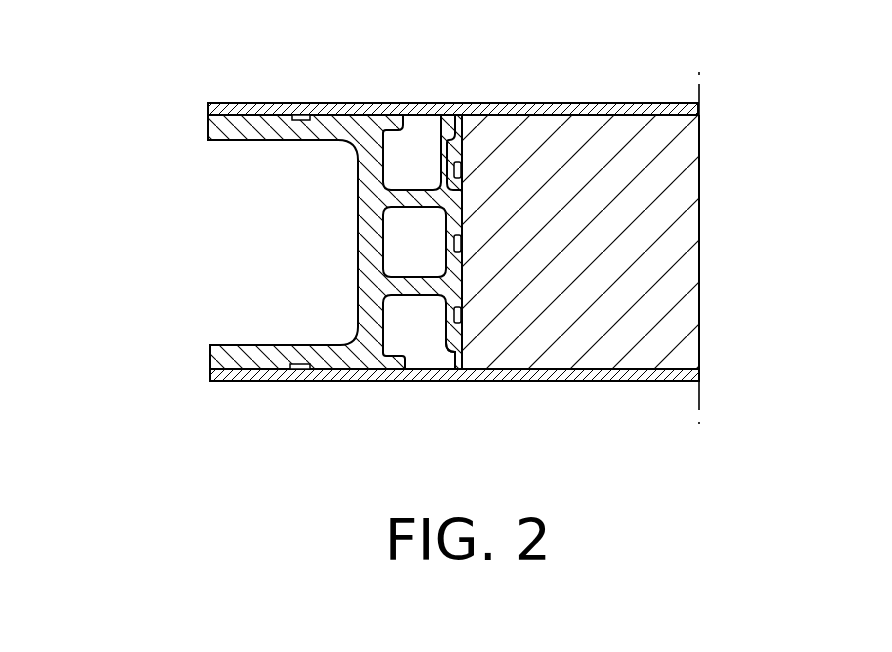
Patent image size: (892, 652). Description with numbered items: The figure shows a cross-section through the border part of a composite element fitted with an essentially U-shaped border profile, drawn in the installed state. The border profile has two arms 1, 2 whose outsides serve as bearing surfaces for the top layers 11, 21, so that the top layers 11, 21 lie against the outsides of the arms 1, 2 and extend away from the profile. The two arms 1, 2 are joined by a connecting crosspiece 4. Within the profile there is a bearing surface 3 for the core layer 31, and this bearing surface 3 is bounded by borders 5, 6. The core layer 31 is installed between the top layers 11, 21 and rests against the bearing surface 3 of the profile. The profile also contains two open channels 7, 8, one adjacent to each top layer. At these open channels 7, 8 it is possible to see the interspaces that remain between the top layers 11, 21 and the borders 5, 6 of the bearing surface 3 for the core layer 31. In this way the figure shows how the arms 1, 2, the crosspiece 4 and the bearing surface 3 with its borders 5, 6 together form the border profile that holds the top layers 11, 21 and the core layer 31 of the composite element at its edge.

The arm 1 is at (275, 140).
The arm 2 is at (278, 345).
The bearing surface 3 is at (453, 223).
The connecting crosspiece 4 is at (357, 295).
The border 5 is at (455, 115).
The border 6 is at (455, 347).
The open channel 7 is at (410, 152).
The open channel 8 is at (425, 328).
The top layer 11 is at (586, 103).
The top layer 21 is at (577, 381).
The core layer 31 is at (628, 272).